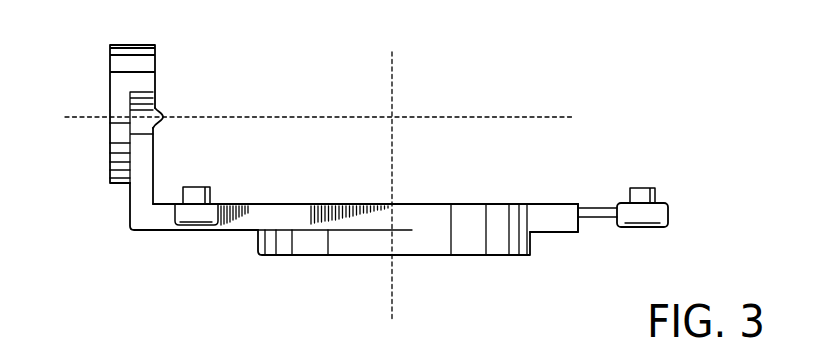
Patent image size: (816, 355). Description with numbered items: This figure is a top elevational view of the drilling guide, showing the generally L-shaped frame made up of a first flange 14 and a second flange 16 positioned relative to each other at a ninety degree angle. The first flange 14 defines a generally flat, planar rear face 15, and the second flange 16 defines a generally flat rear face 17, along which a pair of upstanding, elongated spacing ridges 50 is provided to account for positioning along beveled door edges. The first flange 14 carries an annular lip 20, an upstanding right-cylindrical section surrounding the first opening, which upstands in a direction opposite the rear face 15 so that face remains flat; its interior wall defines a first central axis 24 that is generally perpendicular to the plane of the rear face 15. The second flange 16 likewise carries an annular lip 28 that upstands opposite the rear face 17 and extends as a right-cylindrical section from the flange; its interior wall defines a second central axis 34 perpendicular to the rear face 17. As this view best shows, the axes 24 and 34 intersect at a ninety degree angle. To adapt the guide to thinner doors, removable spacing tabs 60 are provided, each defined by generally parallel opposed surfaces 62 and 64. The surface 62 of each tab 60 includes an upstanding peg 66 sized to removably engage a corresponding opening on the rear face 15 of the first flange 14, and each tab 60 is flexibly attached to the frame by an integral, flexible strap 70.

The first flange 14 is at (257, 219).
The rear face 15 is at (548, 203).
The second flange 16 is at (142, 187).
The rear face 17 is at (155, 173).
The annular lip 20 is at (519, 246).
The first central axis 24 is at (392, 288).
The annular lip 28 is at (110, 68).
The second central axis 34 is at (80, 110).
The spacing ridges 50 is at (163, 117).
The spacing tabs 60 is at (220, 204).
The surface 62 is at (661, 203).
The surface 64 is at (658, 227).
The upstanding peg 66 is at (193, 186).
The flexible strap 70 is at (593, 216).